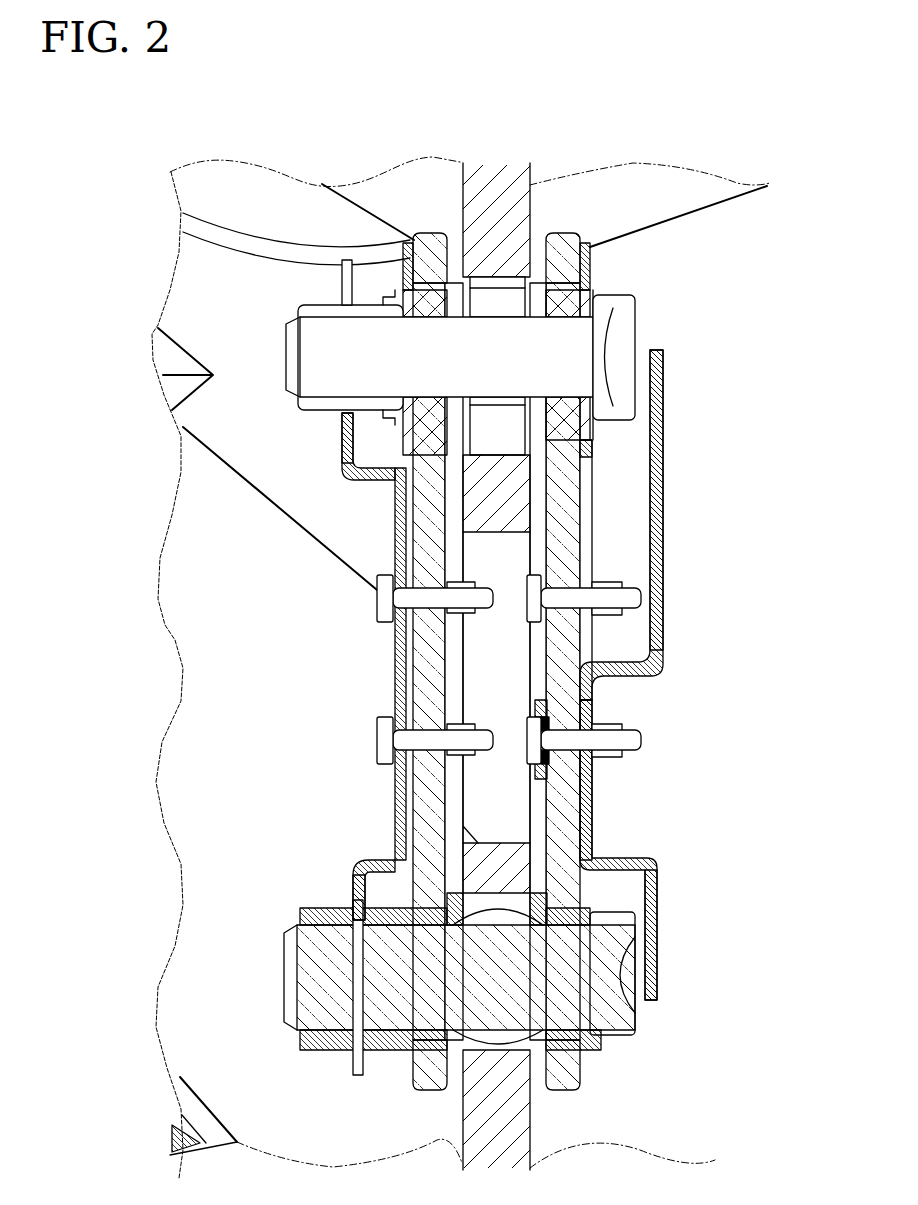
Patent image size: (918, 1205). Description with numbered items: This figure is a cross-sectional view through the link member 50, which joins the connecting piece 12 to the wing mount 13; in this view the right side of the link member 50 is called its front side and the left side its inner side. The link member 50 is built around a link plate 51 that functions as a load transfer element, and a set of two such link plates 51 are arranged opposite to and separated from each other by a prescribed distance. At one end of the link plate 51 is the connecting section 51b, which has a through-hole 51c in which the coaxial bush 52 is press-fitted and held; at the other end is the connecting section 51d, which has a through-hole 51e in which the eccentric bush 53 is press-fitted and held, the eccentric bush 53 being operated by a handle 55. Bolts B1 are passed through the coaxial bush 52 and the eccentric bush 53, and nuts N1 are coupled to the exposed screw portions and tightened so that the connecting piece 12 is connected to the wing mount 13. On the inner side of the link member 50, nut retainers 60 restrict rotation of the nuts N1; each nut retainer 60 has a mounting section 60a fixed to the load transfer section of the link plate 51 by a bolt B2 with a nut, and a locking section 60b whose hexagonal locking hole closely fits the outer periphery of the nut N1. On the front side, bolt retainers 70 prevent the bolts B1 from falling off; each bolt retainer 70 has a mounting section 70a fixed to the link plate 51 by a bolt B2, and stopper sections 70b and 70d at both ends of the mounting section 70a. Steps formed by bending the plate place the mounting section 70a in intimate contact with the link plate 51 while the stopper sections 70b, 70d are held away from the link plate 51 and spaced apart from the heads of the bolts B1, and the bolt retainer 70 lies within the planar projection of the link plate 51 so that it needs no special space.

The connecting piece 12 is at (535, 1135).
The wing mount 13 is at (718, 197).
The link member 50 is at (750, 331).
The link plate 51 is at (595, 567).
The connecting section 51b is at (582, 1086).
The through-hole 51c is at (390, 963).
The connecting section 51d is at (430, 233).
The through-hole 51e is at (437, 320).
The coaxial bush 52 is at (625, 1040).
The eccentric bush 53 is at (403, 275).
The handle 55 is at (450, 562).
The nut retainer 60 is at (380, 495).
The mounting section 60a is at (395, 535).
The locking section 60b is at (343, 445).
The bolt retainer 70 is at (610, 787).
The mounting section 70a is at (595, 810).
The stopper section 70b is at (660, 935).
The stopper section 70d is at (662, 485).
The bolt B1 is at (637, 312).
The bolt B2 is at (376, 733).
The nut N1 is at (183, 427).